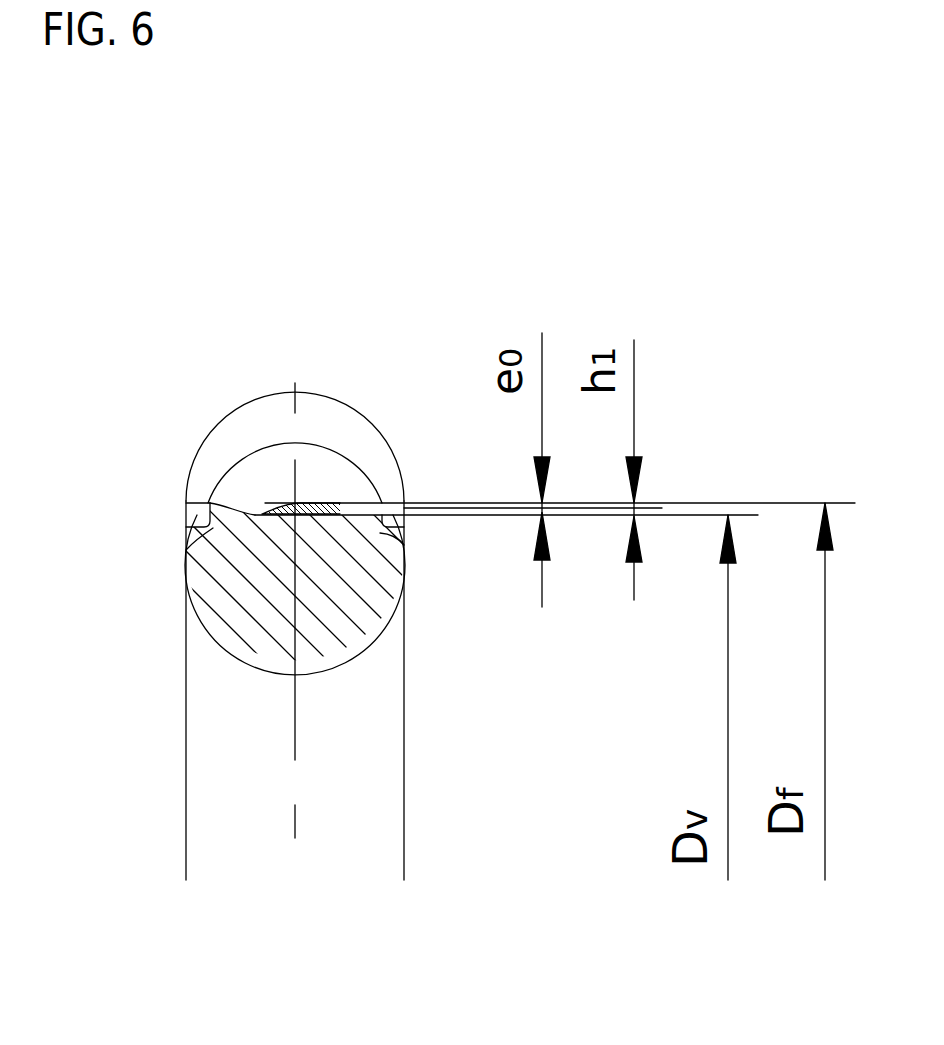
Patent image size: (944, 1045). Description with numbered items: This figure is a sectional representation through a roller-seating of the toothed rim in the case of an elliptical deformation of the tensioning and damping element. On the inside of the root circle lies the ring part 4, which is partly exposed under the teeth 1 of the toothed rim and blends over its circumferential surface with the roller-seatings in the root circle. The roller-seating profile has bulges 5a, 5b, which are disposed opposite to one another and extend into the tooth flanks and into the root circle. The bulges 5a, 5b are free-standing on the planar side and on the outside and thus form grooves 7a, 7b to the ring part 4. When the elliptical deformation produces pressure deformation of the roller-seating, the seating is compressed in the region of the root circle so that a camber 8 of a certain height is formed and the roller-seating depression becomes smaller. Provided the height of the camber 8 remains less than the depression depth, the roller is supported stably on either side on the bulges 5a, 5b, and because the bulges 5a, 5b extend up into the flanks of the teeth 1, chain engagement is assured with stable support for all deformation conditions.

The teeth 1 is at (363, 413).
The ring part 4 is at (252, 643).
The bulge 5a is at (209, 503).
The bulge 5b is at (383, 503).
The groove 7a is at (210, 528).
The groove 7b is at (405, 543).
The camber 8 is at (303, 505).